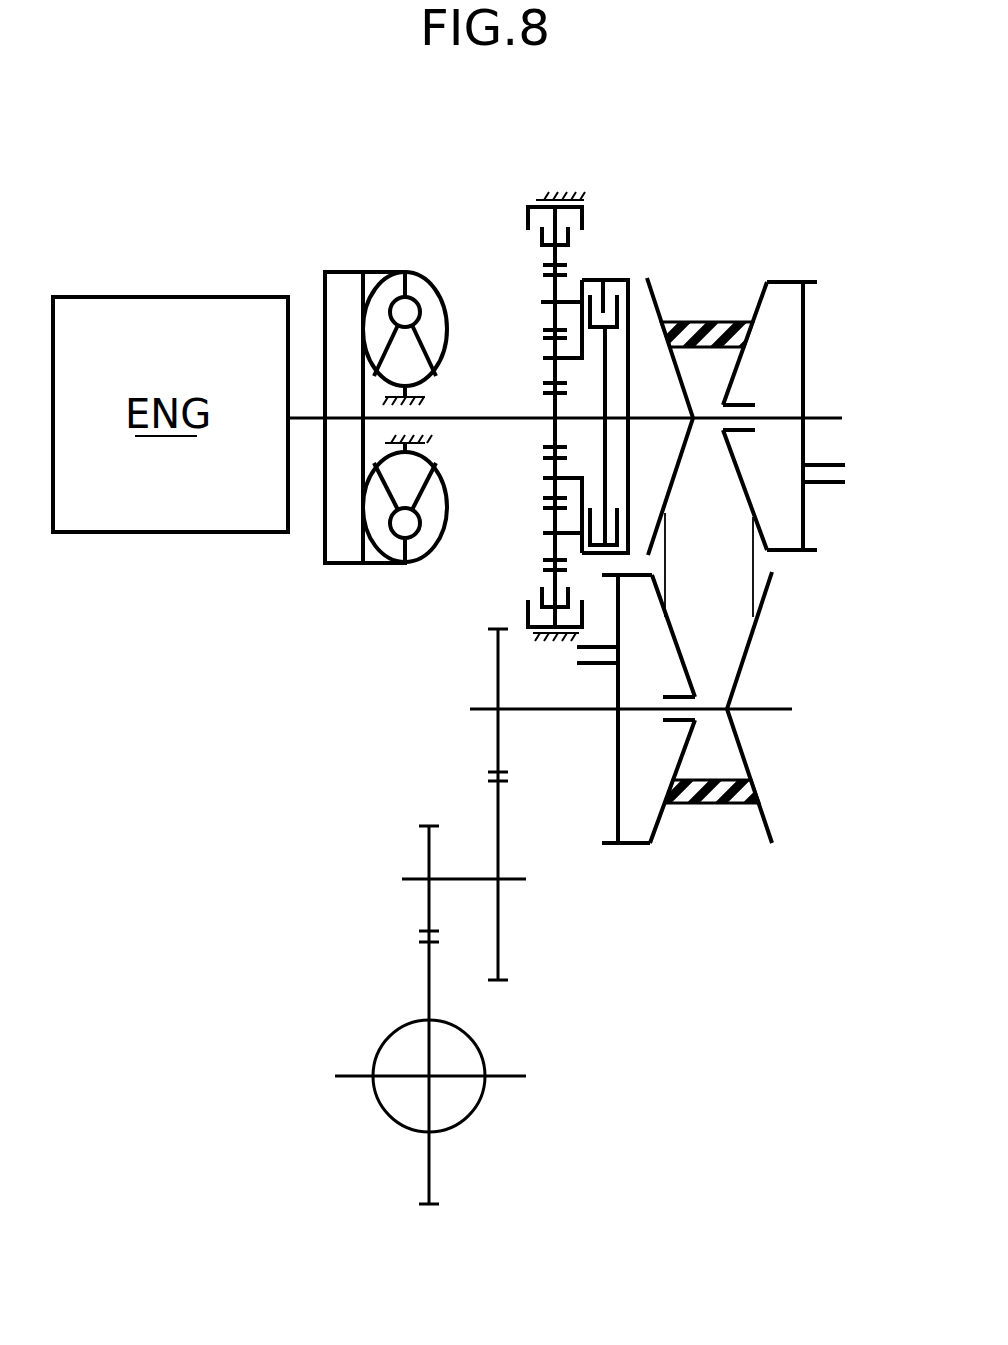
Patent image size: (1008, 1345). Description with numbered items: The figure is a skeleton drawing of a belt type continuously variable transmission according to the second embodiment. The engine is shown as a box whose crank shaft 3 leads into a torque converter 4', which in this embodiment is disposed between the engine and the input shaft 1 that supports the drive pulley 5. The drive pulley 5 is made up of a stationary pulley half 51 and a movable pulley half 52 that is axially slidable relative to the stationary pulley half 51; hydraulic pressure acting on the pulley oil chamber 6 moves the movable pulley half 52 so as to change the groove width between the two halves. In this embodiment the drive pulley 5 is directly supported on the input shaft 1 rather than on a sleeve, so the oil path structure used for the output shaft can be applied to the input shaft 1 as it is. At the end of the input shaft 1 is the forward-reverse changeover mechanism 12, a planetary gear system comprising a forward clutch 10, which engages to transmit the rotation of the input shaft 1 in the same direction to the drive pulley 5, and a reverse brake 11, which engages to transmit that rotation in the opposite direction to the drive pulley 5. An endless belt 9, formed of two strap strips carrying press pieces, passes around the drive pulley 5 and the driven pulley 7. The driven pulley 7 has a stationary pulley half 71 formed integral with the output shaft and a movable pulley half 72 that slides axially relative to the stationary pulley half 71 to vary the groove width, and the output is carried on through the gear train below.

The input shaft 1 is at (822, 414).
The crank shaft 3 is at (308, 418).
The torque converter 4' is at (378, 364).
The drive pulley 5 is at (770, 338).
The stationary pulley half 51 is at (662, 308).
The movable pulley half 52 is at (808, 379).
The pulley oil chamber 6 is at (790, 282).
The driven pulley 7 is at (631, 784).
The stationary pulley half 71 is at (760, 820).
The movable pulley half 72 is at (636, 745).
The endless belt 9 is at (720, 572).
The forward clutch 10 is at (592, 280).
The reverse brake 11 is at (583, 227).
The forward-reverse changeover mechanism 12 is at (520, 296).